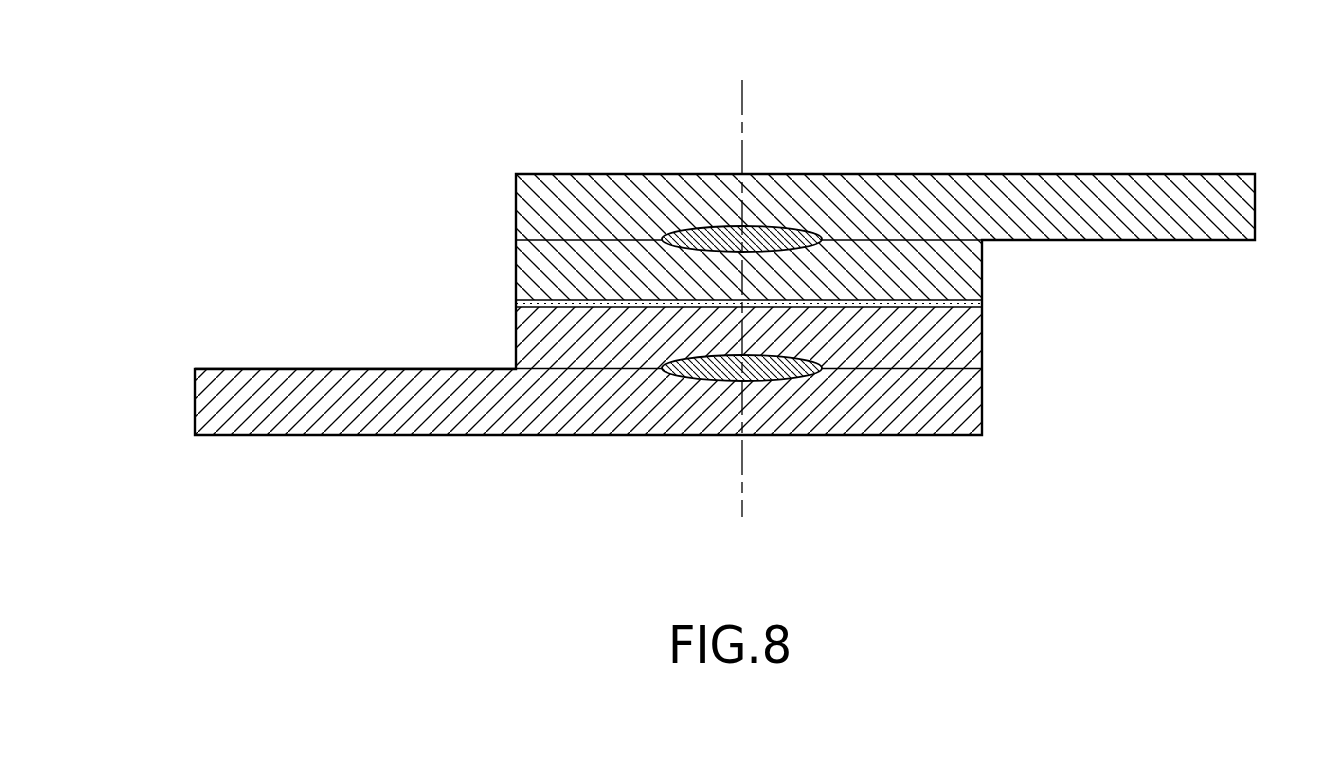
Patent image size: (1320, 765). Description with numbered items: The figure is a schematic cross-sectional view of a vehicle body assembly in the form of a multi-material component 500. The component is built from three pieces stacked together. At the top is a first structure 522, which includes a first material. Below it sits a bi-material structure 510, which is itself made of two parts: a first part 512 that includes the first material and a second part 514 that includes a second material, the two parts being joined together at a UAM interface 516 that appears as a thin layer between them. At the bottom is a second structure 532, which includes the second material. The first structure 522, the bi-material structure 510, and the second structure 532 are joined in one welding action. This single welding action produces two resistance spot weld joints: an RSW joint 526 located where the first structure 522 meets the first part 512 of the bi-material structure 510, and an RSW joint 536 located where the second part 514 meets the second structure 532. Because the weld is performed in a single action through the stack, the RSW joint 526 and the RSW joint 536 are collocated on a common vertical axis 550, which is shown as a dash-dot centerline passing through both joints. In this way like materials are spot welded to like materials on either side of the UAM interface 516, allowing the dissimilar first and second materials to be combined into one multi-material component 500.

The multi-material component 500 is at (700, 326).
The bi-material structure 510 is at (776, 337).
The first part 512 is at (960, 267).
The second part 514 is at (943, 350).
The UAM interface 516 is at (982, 303).
The first structure 522 is at (1166, 195).
The RSW joint 526 is at (763, 237).
The second structure 532 is at (259, 388).
The RSW joint 536 is at (773, 372).
The common vertical axis 550 is at (742, 503).